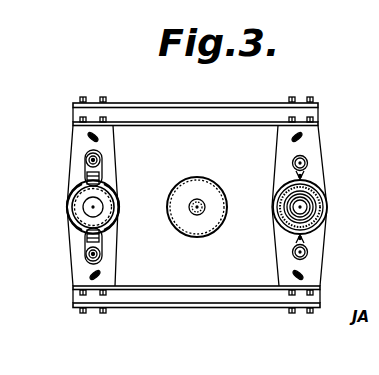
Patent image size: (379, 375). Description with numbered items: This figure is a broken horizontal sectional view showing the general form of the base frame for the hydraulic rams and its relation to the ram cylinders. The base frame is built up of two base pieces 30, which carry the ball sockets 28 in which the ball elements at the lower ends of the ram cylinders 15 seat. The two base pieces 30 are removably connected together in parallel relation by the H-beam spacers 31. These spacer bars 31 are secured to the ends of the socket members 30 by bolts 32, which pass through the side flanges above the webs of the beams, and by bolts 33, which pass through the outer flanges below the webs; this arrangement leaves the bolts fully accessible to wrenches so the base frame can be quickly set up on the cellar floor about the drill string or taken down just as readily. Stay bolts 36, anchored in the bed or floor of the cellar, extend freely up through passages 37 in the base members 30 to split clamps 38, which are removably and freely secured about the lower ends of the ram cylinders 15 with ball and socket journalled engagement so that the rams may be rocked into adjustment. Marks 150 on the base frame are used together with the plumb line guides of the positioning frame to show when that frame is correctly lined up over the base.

The cylinder 15 is at (73, 203).
The ball socket 28 is at (296, 205).
The base piece 30 is at (70, 156).
The H-beam spacer 31 is at (134, 108).
The bolt 32 is at (304, 116).
The bolt 33 is at (294, 96).
The stay bolt 36 is at (101, 159).
The passage 37 is at (292, 163).
The split clamp 38 is at (70, 226).
The mark 150 is at (304, 178).